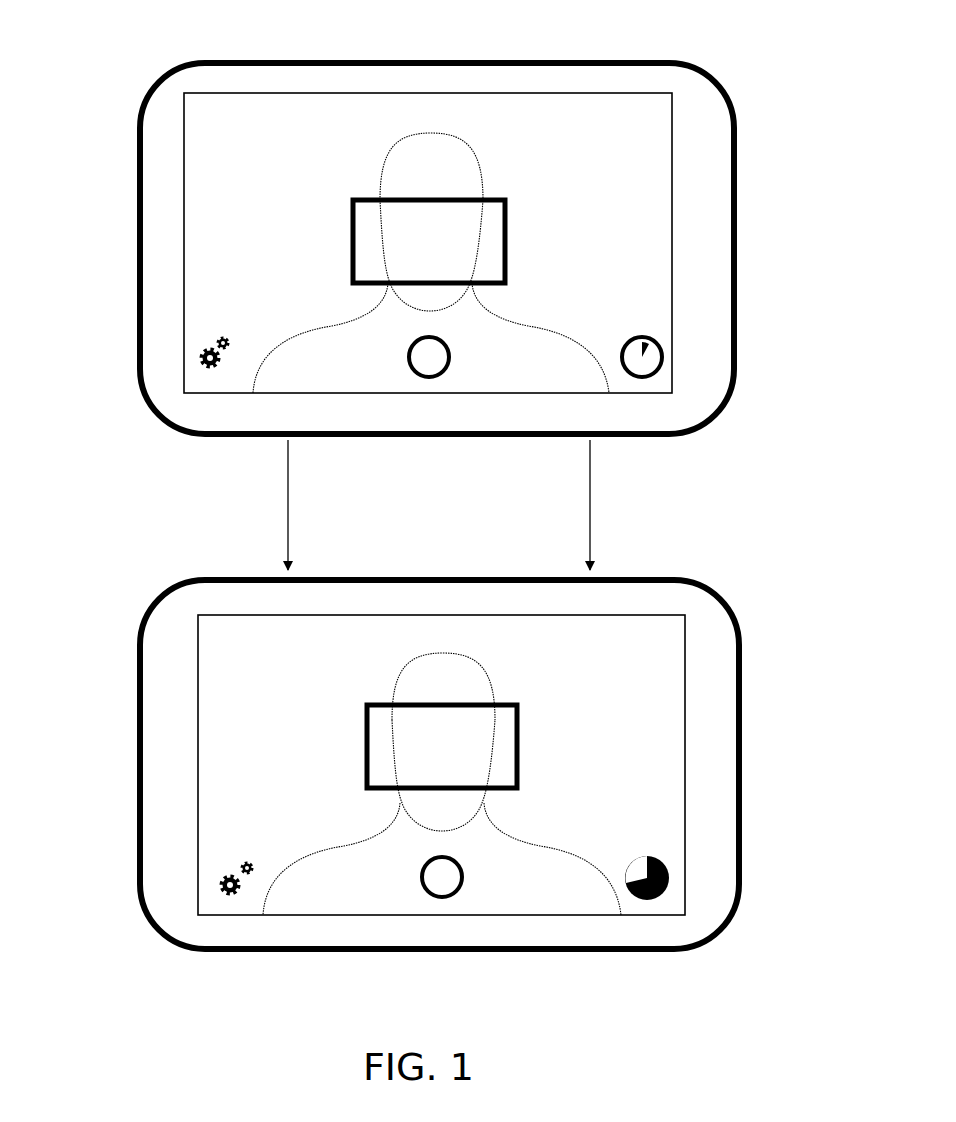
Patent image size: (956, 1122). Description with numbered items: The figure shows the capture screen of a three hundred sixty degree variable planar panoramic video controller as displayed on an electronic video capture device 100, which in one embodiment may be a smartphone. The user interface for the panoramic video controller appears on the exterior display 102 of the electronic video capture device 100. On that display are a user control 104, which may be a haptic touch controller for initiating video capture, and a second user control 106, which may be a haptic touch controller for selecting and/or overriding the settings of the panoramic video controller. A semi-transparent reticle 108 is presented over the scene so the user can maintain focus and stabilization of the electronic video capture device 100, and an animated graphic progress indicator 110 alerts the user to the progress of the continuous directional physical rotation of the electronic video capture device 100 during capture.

The electronic video capture device 100 is at (152, 68).
The exterior display 102 is at (440, 93).
The user control for initiating video capture 104 is at (420, 376).
The second user control for selecting and/or overriding settings 106 is at (195, 347).
The semi-transparent reticle 108 is at (505, 241).
The animated graphic progress indicator 110 is at (652, 342).